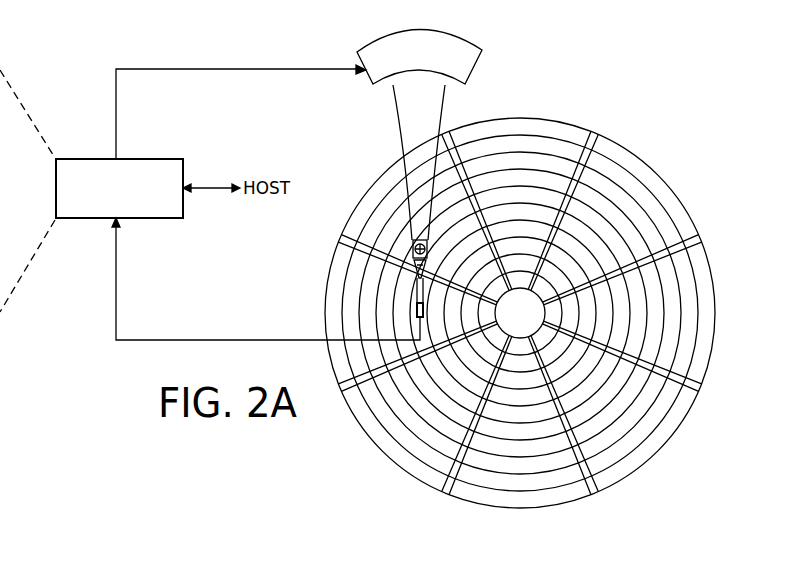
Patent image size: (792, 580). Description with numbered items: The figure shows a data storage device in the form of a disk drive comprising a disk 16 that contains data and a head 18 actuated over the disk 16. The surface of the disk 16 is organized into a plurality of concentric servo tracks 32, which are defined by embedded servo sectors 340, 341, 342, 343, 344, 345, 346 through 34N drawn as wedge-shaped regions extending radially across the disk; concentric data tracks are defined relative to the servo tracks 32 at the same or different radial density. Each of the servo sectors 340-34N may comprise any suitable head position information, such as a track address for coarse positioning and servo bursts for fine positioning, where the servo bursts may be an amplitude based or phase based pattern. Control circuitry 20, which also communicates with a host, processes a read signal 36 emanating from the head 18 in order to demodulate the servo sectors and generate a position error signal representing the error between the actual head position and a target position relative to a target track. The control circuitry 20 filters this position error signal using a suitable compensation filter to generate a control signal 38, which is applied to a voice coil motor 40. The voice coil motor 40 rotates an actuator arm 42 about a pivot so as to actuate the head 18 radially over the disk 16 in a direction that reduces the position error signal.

The disk 16 is at (652, 166).
The head 18 is at (415, 308).
The control circuitry 20 is at (153, 159).
The servo tracks 32 is at (506, 145).
The servo sector 34N is at (451, 140).
The servo sector 340 is at (597, 140).
The servo sector 341 is at (693, 240).
The servo sector 342 is at (693, 388).
The servo sector 343 is at (587, 487).
The servo sector 344 is at (445, 487).
The servo sector 345 is at (343, 388).
The servo sector 346 is at (348, 235).
The read signal 36 is at (203, 340).
The control signal 38 is at (116, 109).
The voice coil motor 40 is at (372, 86).
The actuator arm 42 is at (404, 137).